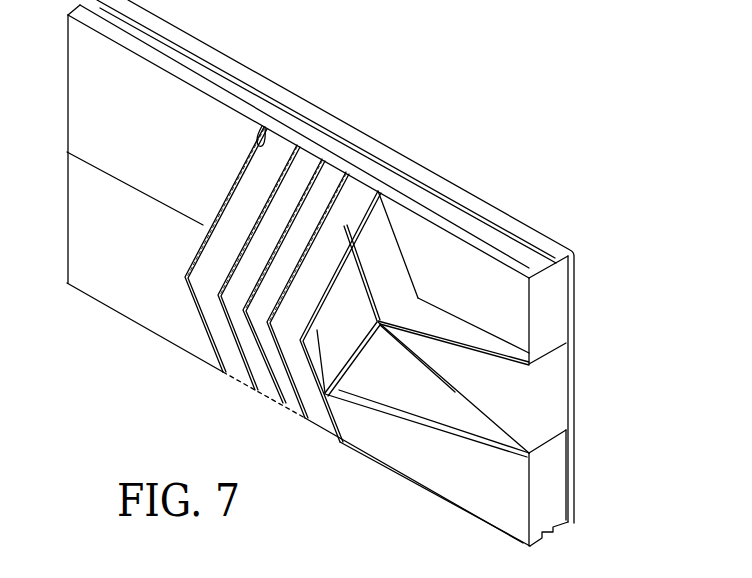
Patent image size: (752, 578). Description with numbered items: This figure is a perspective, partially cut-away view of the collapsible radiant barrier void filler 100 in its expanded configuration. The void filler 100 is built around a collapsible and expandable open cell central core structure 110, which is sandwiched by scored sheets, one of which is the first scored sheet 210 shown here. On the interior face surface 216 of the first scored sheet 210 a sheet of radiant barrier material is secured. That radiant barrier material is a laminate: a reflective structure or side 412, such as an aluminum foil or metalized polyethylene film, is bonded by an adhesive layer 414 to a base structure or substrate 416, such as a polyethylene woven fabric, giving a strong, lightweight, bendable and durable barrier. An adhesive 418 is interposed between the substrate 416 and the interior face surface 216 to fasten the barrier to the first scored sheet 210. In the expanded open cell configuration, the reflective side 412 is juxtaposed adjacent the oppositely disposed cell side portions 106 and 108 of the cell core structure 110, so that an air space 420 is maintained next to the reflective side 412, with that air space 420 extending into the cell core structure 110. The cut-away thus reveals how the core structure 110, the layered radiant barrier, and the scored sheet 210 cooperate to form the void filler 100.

The collapsible radiant barrier void filler 100 is at (495, 83).
The first scored sheet 210 is at (197, 128).
The interior face surface 216 is at (255, 181).
The adhesive 418 is at (281, 203).
The base structure or substrate 416 is at (302, 220).
The adhesive layer 414 is at (325, 242).
The reflective structure or side 412 is at (347, 247).
The air space 420 is at (344, 325).
The cell side portion 106 is at (407, 325).
The cell side portion 108 is at (479, 310).
The open cell central core structure 110 is at (552, 373).